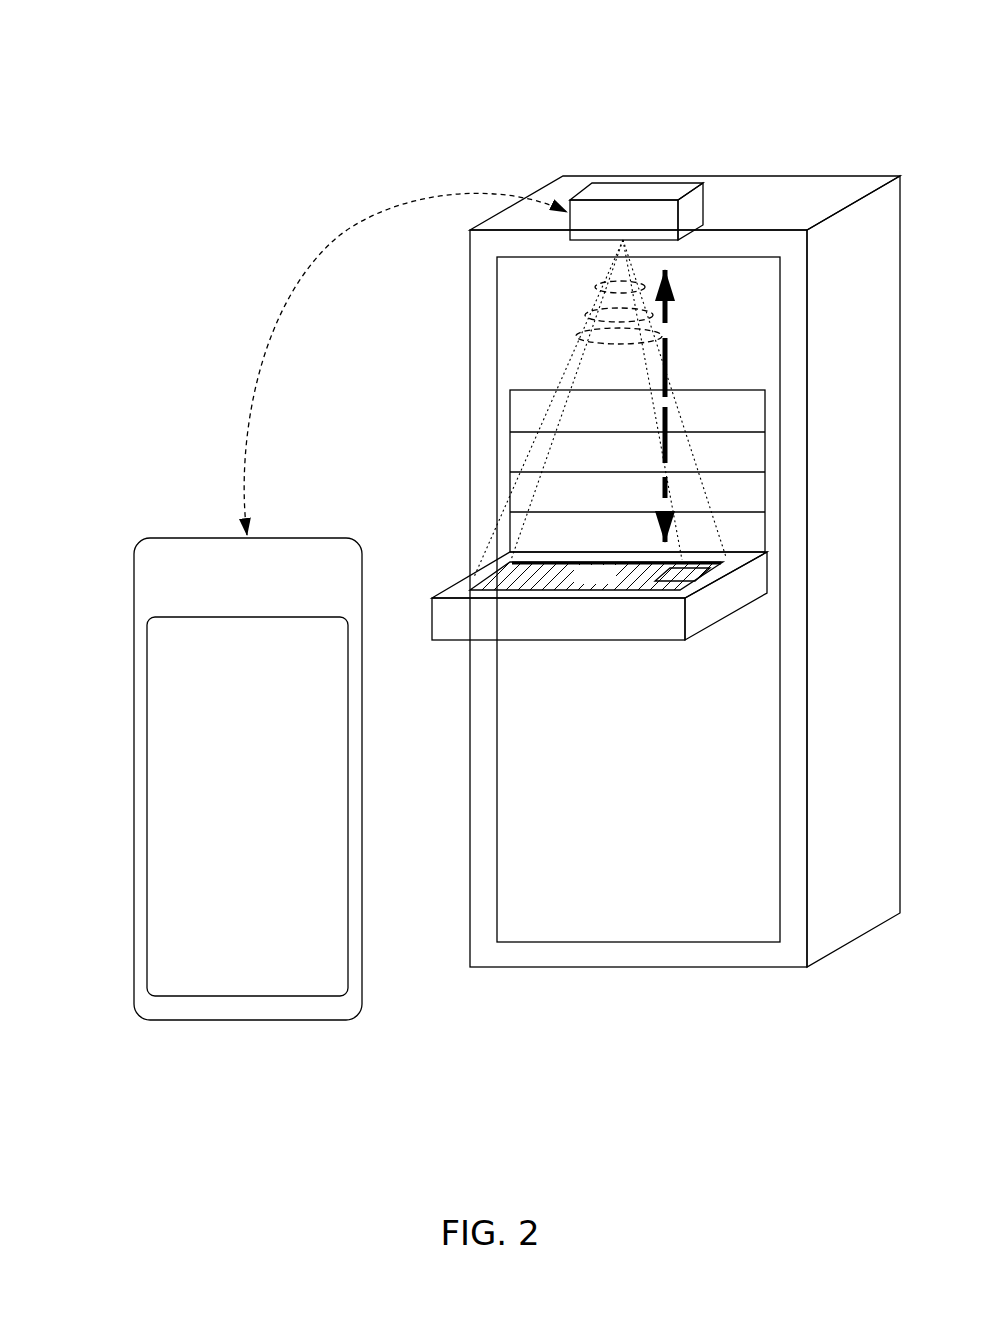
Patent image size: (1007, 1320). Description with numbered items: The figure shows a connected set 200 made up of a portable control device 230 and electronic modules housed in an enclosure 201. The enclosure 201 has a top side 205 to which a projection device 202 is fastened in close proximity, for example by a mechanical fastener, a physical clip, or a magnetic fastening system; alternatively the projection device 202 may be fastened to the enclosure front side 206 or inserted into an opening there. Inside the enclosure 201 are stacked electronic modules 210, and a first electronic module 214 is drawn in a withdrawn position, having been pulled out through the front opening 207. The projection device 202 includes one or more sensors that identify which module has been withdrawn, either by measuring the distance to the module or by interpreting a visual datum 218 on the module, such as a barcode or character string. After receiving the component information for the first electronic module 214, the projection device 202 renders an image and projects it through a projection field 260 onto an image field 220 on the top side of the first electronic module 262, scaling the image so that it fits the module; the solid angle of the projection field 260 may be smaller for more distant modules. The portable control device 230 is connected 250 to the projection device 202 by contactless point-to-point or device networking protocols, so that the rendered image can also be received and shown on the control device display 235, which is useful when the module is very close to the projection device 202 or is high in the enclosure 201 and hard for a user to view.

The connected set 200 is at (165, 93).
The enclosure 201 is at (740, 175).
The projection device 202 is at (604, 233).
The top side 205 is at (736, 216).
The enclosure front side 206 is at (550, 957).
The front opening 207 is at (710, 910).
The electronic module 210 is at (578, 422).
The first electronic module 214 is at (538, 630).
The visual datum 218 is at (690, 553).
The image field 220 is at (575, 585).
The portable control device 230 is at (222, 590).
The control device display 235 is at (222, 705).
The connection 250 is at (262, 325).
The projection field 260 is at (595, 287).
The top side of the first electronic module 262 is at (497, 570).